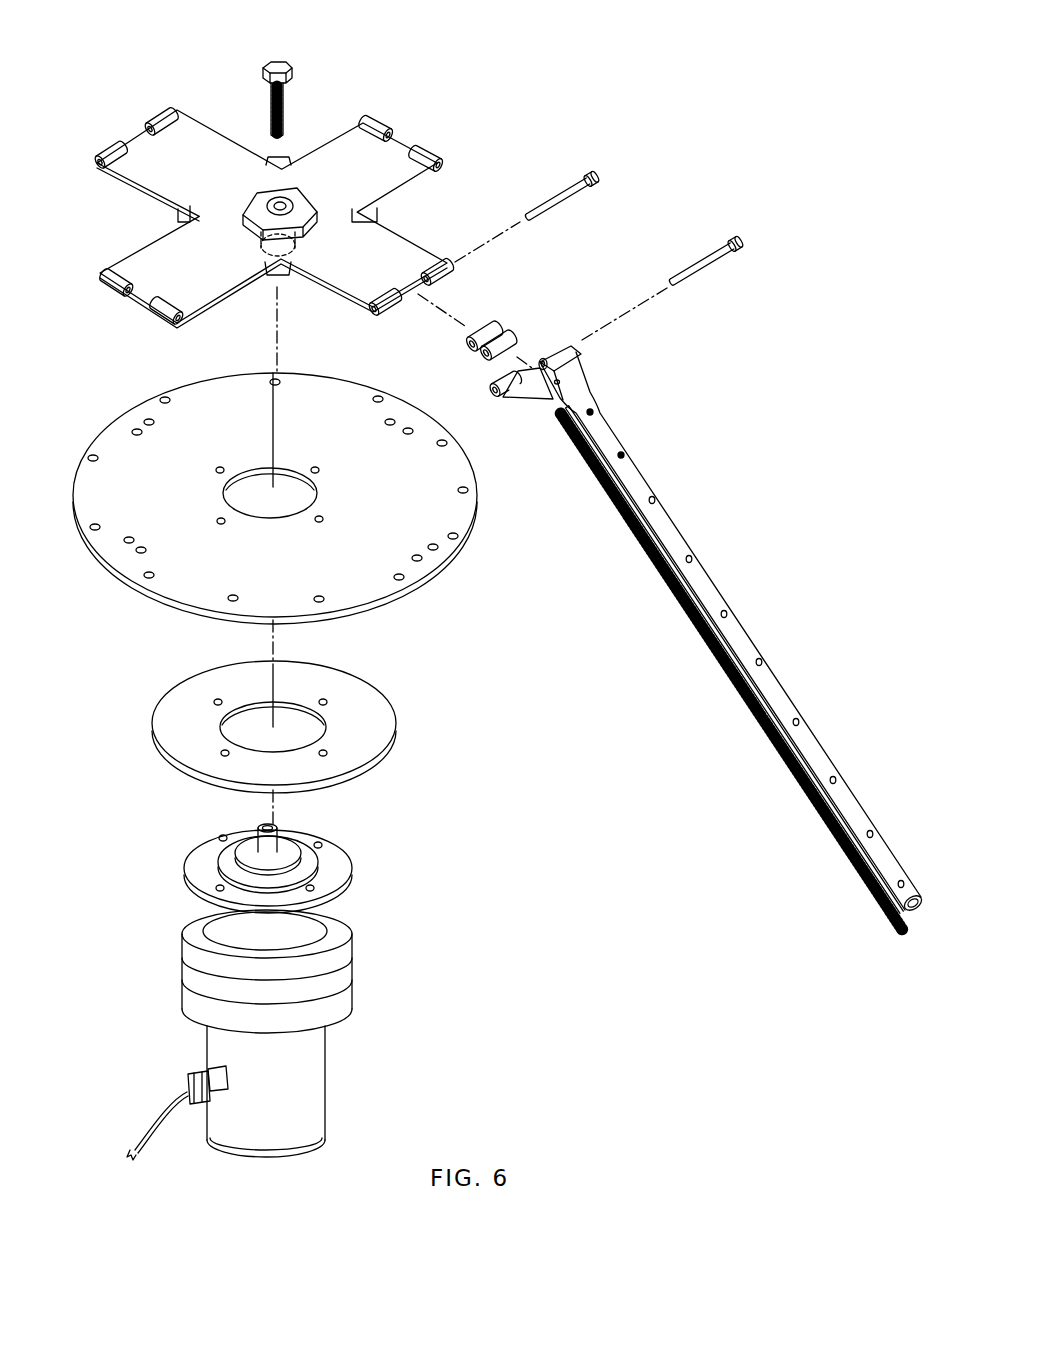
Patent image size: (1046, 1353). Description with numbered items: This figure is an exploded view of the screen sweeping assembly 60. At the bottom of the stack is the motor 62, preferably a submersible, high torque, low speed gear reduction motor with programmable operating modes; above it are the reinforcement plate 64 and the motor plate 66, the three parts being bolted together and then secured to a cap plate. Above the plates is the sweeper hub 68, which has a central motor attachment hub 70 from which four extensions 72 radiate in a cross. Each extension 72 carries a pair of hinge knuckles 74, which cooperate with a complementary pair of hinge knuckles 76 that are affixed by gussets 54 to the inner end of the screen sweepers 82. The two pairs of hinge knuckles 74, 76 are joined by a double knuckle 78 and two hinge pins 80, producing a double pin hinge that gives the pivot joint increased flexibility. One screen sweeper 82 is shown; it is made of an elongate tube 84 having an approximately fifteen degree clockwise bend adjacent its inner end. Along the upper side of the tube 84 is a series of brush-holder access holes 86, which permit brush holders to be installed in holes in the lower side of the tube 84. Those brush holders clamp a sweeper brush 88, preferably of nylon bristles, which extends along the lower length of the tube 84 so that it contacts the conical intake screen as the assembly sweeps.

The gussets 54 is at (577, 366).
The screen sweeping assembly 60 is at (598, 881).
The motor 62 is at (356, 964).
The reinforcement plate 64 is at (395, 698).
The motor plate 66 is at (453, 565).
The sweeper hub 68 is at (445, 119).
The central motor attachment hub 70 is at (263, 203).
The extensions 72 is at (212, 128).
The hinge knuckles 74 is at (122, 148).
The hinge knuckles 76 is at (552, 354).
The double knuckle 78 is at (463, 341).
The hinge pins 80 is at (602, 168).
The screen sweepers 82 is at (738, 498).
The elongate tube 84 is at (780, 684).
The brush-holder access holes 86 is at (655, 498).
The sweeper brush 88 is at (780, 757).